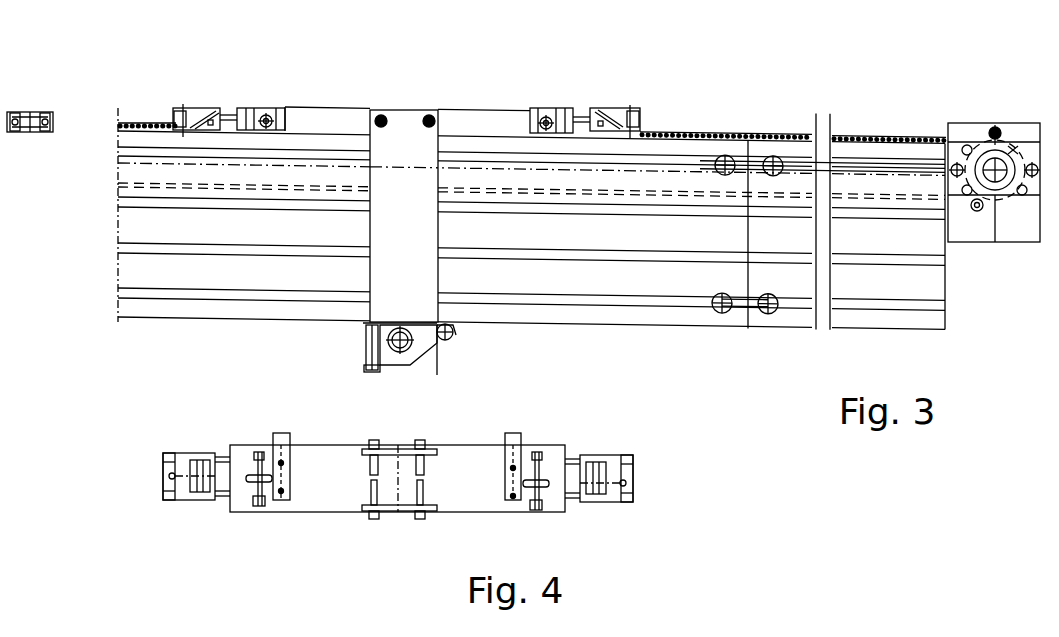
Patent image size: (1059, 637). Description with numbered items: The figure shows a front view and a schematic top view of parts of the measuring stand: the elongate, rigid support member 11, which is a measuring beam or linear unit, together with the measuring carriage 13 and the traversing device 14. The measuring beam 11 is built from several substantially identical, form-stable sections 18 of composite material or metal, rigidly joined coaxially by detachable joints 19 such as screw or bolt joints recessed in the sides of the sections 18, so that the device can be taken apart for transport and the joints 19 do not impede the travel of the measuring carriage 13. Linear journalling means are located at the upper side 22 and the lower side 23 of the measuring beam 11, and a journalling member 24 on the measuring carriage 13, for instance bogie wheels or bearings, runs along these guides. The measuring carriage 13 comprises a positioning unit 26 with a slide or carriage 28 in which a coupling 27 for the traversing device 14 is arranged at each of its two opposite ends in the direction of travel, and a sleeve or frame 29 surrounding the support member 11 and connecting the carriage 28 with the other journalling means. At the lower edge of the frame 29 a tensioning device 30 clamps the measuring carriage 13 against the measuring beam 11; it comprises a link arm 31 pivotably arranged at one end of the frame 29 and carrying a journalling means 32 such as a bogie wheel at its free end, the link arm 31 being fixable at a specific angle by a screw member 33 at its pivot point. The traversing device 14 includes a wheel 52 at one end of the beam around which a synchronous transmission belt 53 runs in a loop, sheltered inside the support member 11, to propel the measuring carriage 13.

In FIG. 3, the support member 11 is at (614, 350).
In FIG. 3, the measuring carriage 13 is at (357, 85).
In FIG. 3, the traversing device 14 is at (700, 116).
In FIG. 3, the sections 18 is at (694, 327).
In FIG. 3, the detachable joints 19 is at (774, 149).
In FIG. 3, the upper side 22 is at (125, 117).
In FIG. 3, the lower side 23 is at (195, 322).
In FIG. 3, the journalling member 24 is at (264, 117).
In FIG. 4, the journalling member 24 is at (256, 508).
In FIG. 3, the positioning unit 26 is at (478, 97).
In FIG. 4, the positioning unit 26 is at (330, 490).
In FIG. 3, the coupling 27 is at (32, 112).
In FIG. 4, the coupling 27 is at (165, 461).
In FIG. 3, the carriage 28 is at (305, 120).
In FIG. 4, the carriage 28 is at (455, 498).
In FIG. 3, the frame 29 is at (385, 250).
In FIG. 3, the tensioning device 30 is at (400, 372).
In FIG. 3, the link arm 31 is at (439, 362).
In FIG. 3, the journalling means 32 is at (456, 337).
In FIG. 3, the screw member 33 is at (395, 322).
In FIG. 3, the wheel 52 is at (1022, 133).
In FIG. 3, the synchronous transmission belt 53 is at (868, 140).